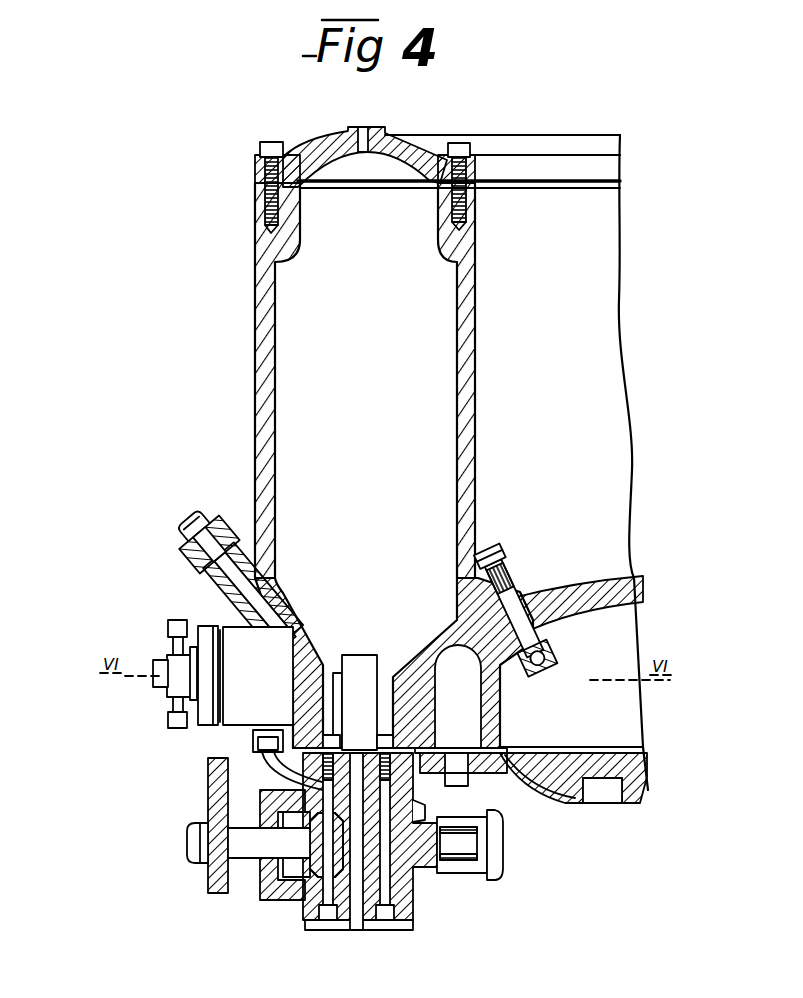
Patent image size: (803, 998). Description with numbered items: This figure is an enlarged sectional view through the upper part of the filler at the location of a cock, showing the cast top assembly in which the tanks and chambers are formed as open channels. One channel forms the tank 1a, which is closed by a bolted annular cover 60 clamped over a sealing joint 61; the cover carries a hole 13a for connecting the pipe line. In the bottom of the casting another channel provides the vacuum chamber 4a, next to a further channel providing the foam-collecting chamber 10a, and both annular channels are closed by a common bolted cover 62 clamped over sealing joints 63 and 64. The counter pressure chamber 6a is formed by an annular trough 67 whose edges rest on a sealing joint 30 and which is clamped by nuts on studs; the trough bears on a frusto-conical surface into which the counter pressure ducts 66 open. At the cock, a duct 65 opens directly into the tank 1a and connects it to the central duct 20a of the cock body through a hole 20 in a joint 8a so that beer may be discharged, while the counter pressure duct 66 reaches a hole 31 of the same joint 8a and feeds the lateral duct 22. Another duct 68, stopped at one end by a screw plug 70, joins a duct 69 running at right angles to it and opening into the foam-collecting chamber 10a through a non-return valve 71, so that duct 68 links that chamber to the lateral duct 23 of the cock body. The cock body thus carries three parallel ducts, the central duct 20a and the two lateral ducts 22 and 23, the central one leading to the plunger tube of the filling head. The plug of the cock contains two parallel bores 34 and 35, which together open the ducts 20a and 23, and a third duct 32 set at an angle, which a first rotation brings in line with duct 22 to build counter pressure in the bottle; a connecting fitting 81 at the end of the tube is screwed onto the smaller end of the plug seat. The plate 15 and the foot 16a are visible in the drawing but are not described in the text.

The tank 1a is at (290, 368).
The vacuum chamber 4a is at (443, 660).
The counter pressure chamber 6a is at (190, 566).
The joint 8a is at (258, 765).
The foam-collecting chamber 10a is at (473, 469).
The hole 13a is at (368, 124).
The plate 15 is at (208, 770).
The foot 16a is at (600, 798).
The hole 20 is at (360, 750).
The central duct 20a is at (358, 905).
The lateral duct 22 is at (266, 791).
The lateral duct 23 is at (398, 793).
The sealing joint 30 is at (253, 598).
The hole 31 is at (325, 740).
The third duct 32 is at (310, 886).
The parallel bore 34 is at (345, 905).
The parallel bore 35 is at (413, 884).
The annular cover 60 is at (317, 140).
The sealing joint 61 is at (286, 158).
The common bolted cover 62 is at (558, 782).
The sealing joint 63 is at (440, 750).
The sealing joint 64 is at (492, 773).
The duct 65 is at (350, 664).
The counter pressure duct 66 is at (298, 606).
The annular trough 67 is at (220, 524).
The duct 68 is at (442, 615).
The duct 69 is at (521, 595).
The screw plug 70 is at (508, 556).
The non-return valve 71 is at (545, 648).
The connecting fitting 81 is at (473, 887).